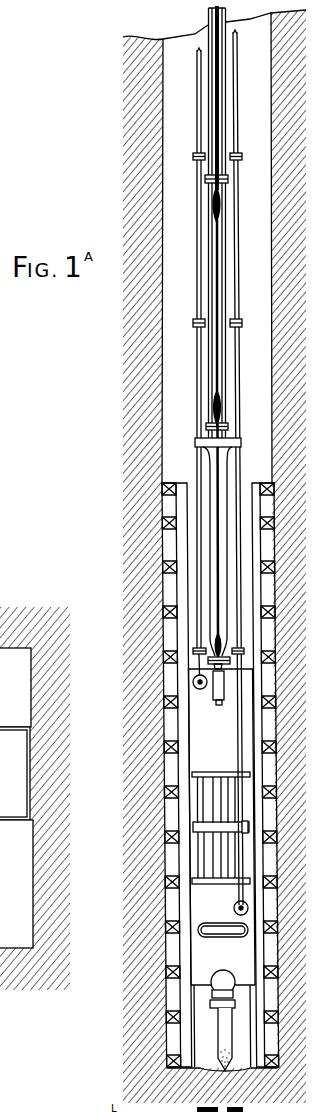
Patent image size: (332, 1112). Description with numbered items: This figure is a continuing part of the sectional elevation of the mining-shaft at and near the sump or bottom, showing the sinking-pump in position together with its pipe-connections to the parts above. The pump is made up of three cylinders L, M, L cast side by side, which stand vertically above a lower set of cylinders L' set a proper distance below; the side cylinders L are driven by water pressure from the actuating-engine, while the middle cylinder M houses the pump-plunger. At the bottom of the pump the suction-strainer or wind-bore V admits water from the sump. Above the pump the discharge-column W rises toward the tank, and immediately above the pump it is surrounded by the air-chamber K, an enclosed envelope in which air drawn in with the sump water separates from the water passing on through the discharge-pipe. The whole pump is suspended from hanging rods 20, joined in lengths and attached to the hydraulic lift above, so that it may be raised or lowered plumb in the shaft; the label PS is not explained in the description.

The discharge-column W is at (220, 277).
The hanging rods 20 is at (218, 363).
The air-chamber K is at (222, 474).
The side cylinder L is at (222, 827).
The middle cylinder M is at (221, 817).
The lower side cylinder L' is at (223, 943).
The suction-strainer or wind-bore V is at (221, 1047).
The pump section PS is at (35, 798).